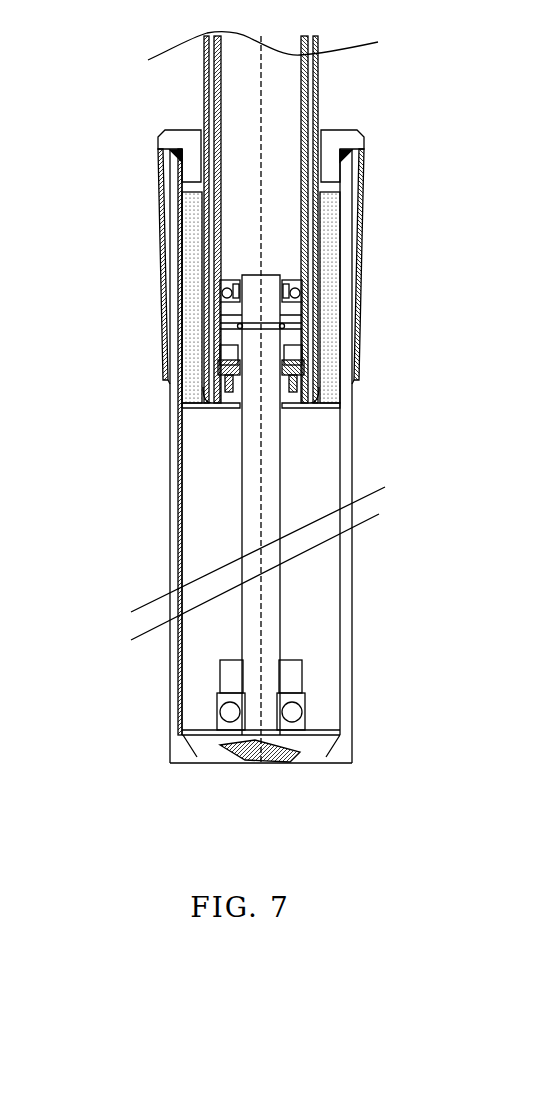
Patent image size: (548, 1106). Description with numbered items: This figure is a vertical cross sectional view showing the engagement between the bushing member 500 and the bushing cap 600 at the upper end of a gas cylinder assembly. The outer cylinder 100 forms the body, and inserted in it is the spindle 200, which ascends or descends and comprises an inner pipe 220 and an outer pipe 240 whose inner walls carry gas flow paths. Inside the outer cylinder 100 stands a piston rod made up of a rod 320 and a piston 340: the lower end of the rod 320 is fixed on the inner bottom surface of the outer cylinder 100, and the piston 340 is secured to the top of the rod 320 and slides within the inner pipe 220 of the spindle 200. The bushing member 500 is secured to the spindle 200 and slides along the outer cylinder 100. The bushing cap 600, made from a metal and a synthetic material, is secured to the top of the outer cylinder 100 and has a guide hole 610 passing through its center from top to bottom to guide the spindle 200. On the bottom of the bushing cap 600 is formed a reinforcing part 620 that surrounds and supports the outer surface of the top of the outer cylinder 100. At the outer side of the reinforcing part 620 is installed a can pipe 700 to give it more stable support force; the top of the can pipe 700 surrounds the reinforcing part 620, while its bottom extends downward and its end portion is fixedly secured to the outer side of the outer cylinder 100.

The outer cylinder 100 is at (178, 505).
The spindle 200 is at (400, 77).
The inner pipe 220 is at (306, 125).
The outer pipe 240 is at (317, 78).
The rod 320 is at (277, 480).
The piston 340 is at (285, 311).
The bushing member 500 is at (192, 263).
The bushing cap 600 is at (192, 138).
The guide hole 610 is at (210, 87).
The reinforcing part 620 is at (186, 168).
The can pipe 700 is at (158, 197).